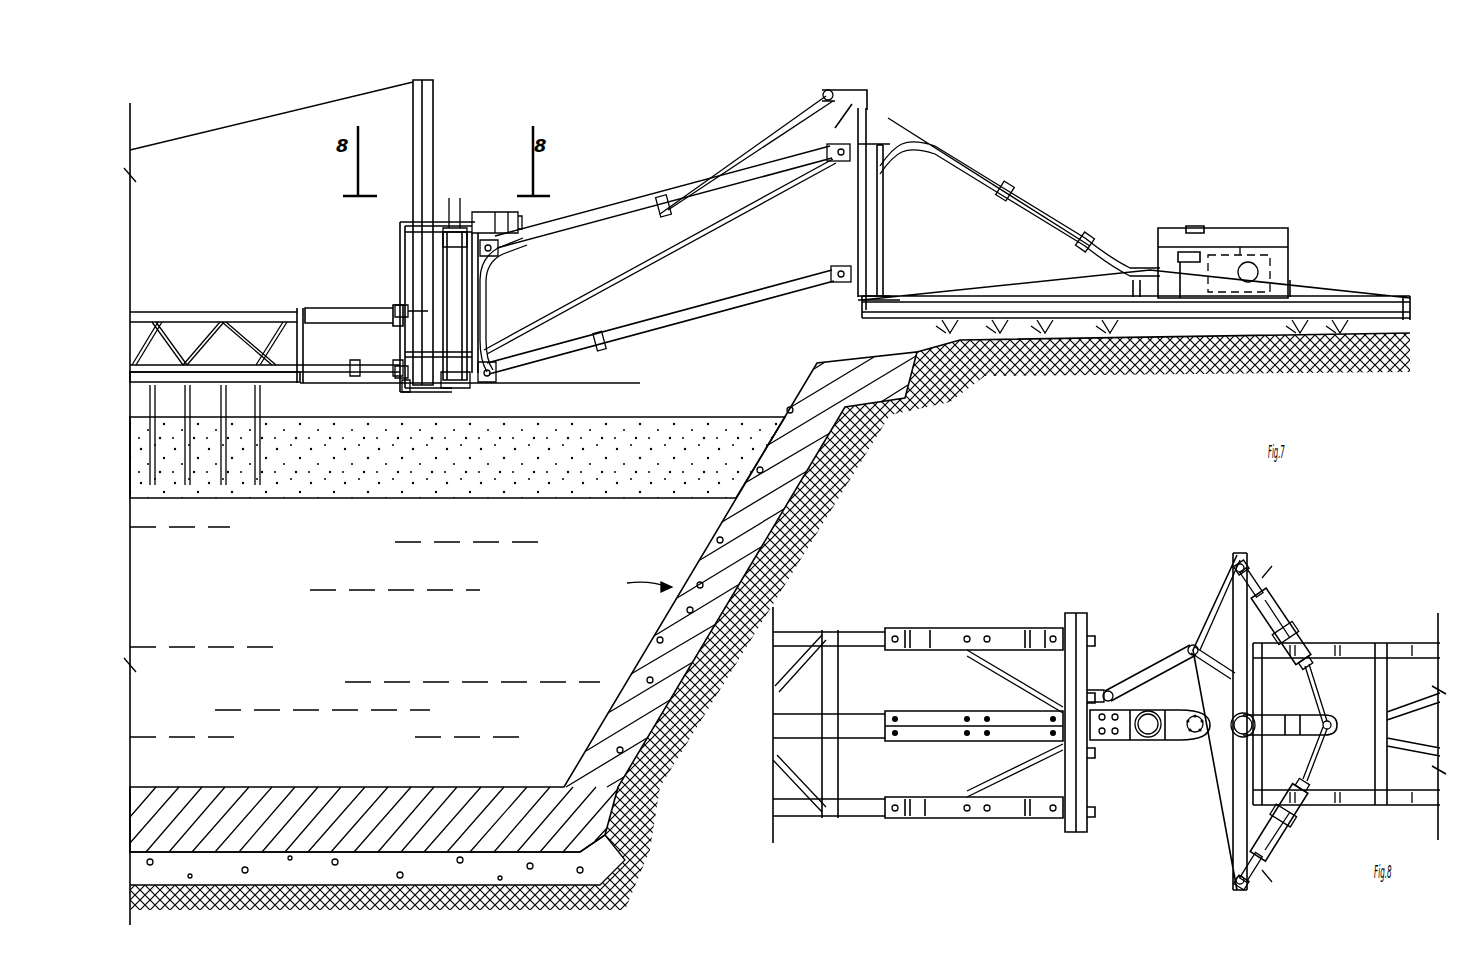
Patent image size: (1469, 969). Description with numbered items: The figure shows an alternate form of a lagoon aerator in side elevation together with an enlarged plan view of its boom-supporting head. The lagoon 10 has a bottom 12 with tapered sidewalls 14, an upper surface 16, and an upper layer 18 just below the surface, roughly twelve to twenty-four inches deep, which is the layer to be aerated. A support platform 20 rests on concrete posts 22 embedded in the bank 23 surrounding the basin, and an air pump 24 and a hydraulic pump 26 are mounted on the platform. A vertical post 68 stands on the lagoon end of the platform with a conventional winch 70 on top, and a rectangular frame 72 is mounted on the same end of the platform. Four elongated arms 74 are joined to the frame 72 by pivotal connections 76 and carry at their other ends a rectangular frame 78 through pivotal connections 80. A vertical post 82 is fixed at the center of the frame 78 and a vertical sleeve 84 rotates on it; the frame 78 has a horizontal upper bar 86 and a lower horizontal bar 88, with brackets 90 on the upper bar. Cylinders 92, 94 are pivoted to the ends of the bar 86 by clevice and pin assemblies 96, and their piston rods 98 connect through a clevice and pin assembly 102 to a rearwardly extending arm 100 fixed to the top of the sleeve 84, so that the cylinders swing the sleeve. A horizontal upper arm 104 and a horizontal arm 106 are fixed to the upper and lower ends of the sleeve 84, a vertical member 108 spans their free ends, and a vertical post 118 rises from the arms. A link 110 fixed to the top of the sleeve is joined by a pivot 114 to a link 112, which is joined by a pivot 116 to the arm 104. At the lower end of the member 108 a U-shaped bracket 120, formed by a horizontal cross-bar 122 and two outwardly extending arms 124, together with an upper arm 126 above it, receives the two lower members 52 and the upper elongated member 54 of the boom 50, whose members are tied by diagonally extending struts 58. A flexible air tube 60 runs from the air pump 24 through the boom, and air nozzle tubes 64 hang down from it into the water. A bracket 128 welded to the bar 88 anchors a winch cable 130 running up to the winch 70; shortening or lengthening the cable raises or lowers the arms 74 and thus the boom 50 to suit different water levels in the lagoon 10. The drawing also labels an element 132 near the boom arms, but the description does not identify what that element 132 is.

In FIG. 7, the lagoon 10 is at (634, 582).
In FIG. 7, the bottom 12 is at (518, 786).
In FIG. 7, the tapered sidewalls 14 is at (698, 575).
In FIG. 7, the upper surface 16 is at (650, 417).
In FIG. 7, the upper layer 18 is at (590, 480).
In FIG. 7, the support platform 20 is at (1313, 288).
In FIG. 7, the concrete posts 22 is at (1350, 333).
In FIG. 7, the bank 23 is at (977, 385).
In FIG. 7, the air pump 24 is at (1253, 228).
In FIG. 7, the hydraulic pump 26 is at (1168, 240).
In FIG. 7, the boom 50 is at (257, 365).
In FIG. 8, the boom 50 is at (867, 633).
In FIG. 7, the lower members 52 is at (157, 296).
In FIG. 8, the lower members 52 is at (800, 620).
In FIG. 7, the upper elongated member 54 is at (240, 312).
In FIG. 8, the upper elongated member 54 is at (927, 711).
In FIG. 7, the diagonally extending struts 58 is at (200, 365).
In FIG. 8, the diagonally extending struts 58 is at (773, 777).
In FIG. 7, the flexible air tube 60 is at (1045, 207).
In FIG. 7, the air nozzle tubes 64 is at (228, 460).
In FIG. 7, the vertical post 68 is at (888, 212).
In FIG. 7, the winch 70 is at (833, 90).
In FIG. 7, the rectangular frame 72 is at (850, 268).
In FIG. 7, the elongated arms 74 is at (765, 290).
In FIG. 8, the elongated arms 74 is at (1343, 647).
In FIG. 7, the pivotal connections 76 is at (872, 222).
In FIG. 7, the rectangular frame 78 is at (480, 290).
In FIG. 8, the rectangular frame 78 is at (1230, 803).
In FIG. 7, the pivotal connections 80 is at (495, 270).
In FIG. 8, the pivotal connections 80 is at (1277, 633).
In FIG. 7, the vertical post 82 is at (455, 228).
In FIG. 7, the vertical sleeve 84 is at (450, 222).
In FIG. 7, the horizontal upper bar 86 is at (468, 230).
In FIG. 8, the horizontal upper bar 86 is at (1237, 600).
In FIG. 7, the horizontal bar 88 is at (455, 335).
In FIG. 8, the brackets 90 is at (1242, 565).
In FIG. 7, the cylinder 92 is at (520, 218).
In FIG. 8, the cylinder 92 is at (1280, 860).
In FIG. 8, the cylinder 94 is at (1280, 617).
In FIG. 8, the clevice and pin assemblies 96 is at (1250, 583).
In FIG. 8, the piston rods 98 is at (1307, 680).
In FIG. 8, the rearwardly extending arm 100 is at (1305, 740).
In FIG. 8, the clevice and pin assembly 102 is at (1323, 713).
In FIG. 7, the horizontal upper arm 104 is at (400, 224).
In FIG. 8, the horizontal upper arm 104 is at (1180, 742).
In FIG. 7, the horizontal arm 106 is at (465, 388).
In FIG. 7, the vertical member 108 is at (400, 266).
In FIG. 8, the link 110 is at (1192, 645).
In FIG. 8, the link 112 is at (1150, 665).
In FIG. 8, the pivot 114 is at (1214, 665).
In FIG. 8, the pivot 116 is at (1108, 691).
In FIG. 7, the vertical post 118 is at (434, 132).
In FIG. 8, the vertical post 118 is at (1195, 735).
In FIG. 7, the U-shaped bracket 120 is at (358, 376).
In FIG. 8, the U-shaped bracket 120 is at (945, 818).
In FIG. 7, the horizontal cross-bar 122 is at (395, 392).
In FIG. 8, the horizontal cross-bar 122 is at (1088, 833).
In FIG. 7, the outwardly extending arms 124 is at (396, 376).
In FIG. 8, the outwardly extending arms 124 is at (910, 627).
In FIG. 7, the upper arm 126 is at (367, 308).
In FIG. 8, the upper arm 126 is at (867, 690).
In FIG. 7, the bracket 128 is at (533, 368).
In FIG. 7, the winch cable 130 is at (515, 374).
In FIG. 7, the guy cable 132 is at (665, 218).